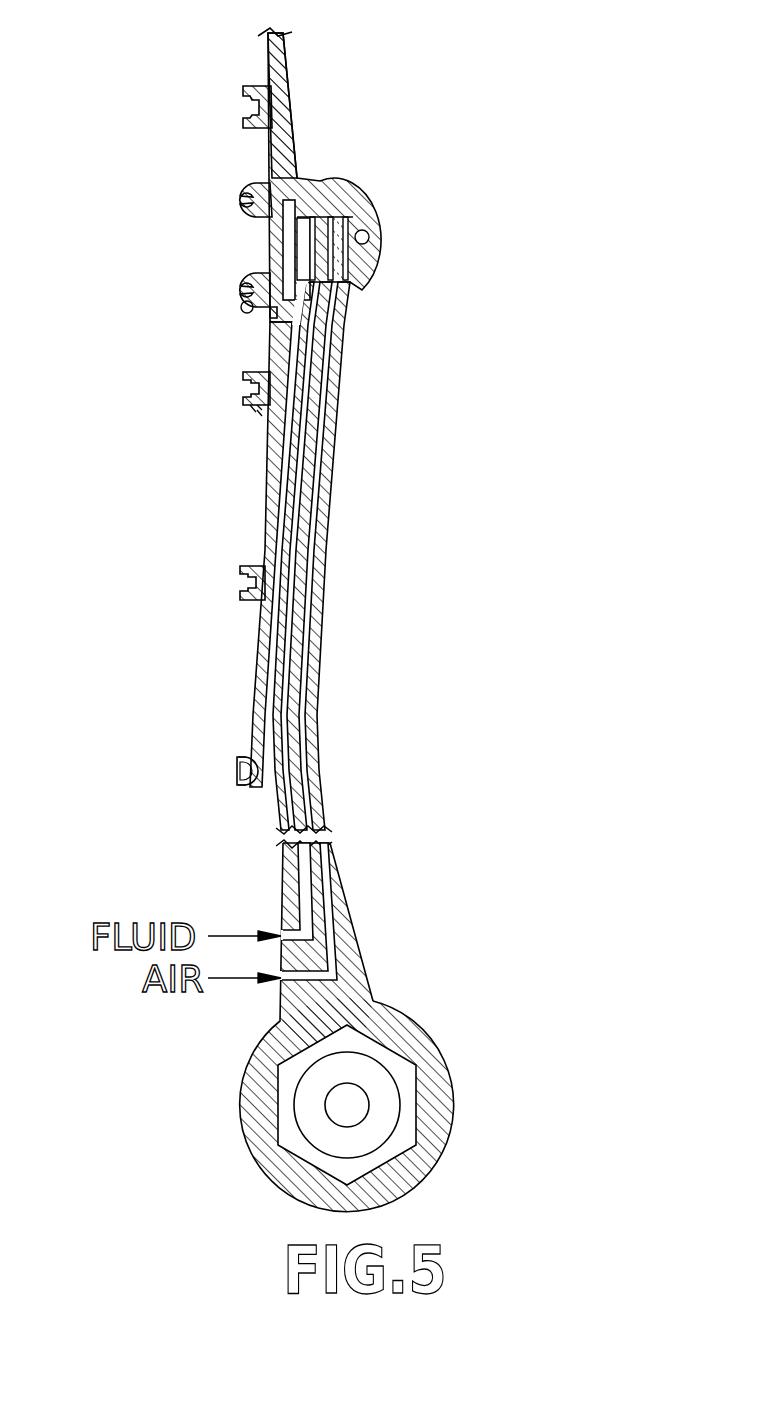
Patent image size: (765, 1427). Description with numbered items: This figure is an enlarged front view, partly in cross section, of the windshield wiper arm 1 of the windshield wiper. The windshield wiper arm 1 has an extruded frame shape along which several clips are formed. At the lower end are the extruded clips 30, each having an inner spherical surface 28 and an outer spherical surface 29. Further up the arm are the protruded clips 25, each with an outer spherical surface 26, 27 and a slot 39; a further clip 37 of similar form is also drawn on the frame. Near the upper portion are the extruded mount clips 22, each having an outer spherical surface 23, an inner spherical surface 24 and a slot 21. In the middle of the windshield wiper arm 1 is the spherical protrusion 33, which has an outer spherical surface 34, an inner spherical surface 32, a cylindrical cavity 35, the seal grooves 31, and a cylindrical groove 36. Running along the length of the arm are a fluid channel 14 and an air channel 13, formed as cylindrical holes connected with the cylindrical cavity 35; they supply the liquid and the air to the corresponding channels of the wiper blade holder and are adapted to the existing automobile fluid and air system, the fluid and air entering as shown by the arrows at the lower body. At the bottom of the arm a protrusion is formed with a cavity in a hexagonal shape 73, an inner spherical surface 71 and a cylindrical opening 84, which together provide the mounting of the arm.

The windshield wiper arm 1 is at (270, 68).
The air channel 13 is at (342, 353).
The fluid channel 14 is at (330, 430).
The slot 21 is at (245, 305).
The extruded mount clip 22 is at (255, 280).
The outer spherical surface 23 is at (248, 308).
The inner spherical surface 24 is at (255, 314).
The protruded clip 25 is at (255, 413).
The outer spherical surface 26 is at (257, 410).
The outer spherical surface 27 is at (257, 415).
The inner spherical surface 28 is at (236, 768).
The outer spherical surface 29 is at (240, 757).
The extruded clip 30 is at (237, 787).
The seal groove 31 is at (357, 258).
The inner spherical surface 32 is at (362, 228).
The spherical protrusion 33 is at (323, 200).
The outer spherical surface 34 is at (343, 200).
The cylindrical cavity 35 is at (352, 305).
The cylindrical groove 36 is at (285, 298).
The middle clip 37 is at (246, 596).
The slot 39 is at (258, 392).
The inner spherical surface 71 is at (343, 1157).
The cavity in a hexagonal shape 73 is at (258, 1107).
The cylindrical opening 84 is at (333, 1122).